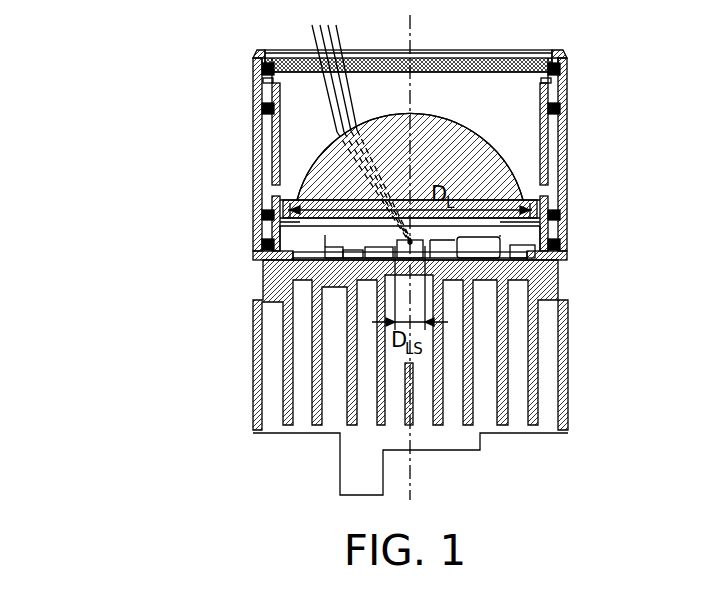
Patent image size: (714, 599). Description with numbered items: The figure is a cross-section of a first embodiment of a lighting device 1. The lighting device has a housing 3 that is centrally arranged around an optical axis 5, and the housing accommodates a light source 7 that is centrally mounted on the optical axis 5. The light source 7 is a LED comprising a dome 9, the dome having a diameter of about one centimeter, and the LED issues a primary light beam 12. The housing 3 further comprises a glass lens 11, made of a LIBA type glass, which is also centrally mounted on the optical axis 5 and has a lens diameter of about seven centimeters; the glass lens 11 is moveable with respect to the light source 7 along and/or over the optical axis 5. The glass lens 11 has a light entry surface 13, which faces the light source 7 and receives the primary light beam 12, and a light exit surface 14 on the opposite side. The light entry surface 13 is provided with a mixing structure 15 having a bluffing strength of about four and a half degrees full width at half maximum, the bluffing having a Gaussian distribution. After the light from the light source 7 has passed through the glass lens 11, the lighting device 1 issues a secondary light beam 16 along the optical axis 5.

The lighting device 1 is at (157, 111).
The housing 3 is at (568, 130).
The optical axis 5 is at (412, 30).
The light source 7 is at (410, 242).
The dome 9 is at (410, 242).
The glass lens 11 is at (487, 173).
The primary light beam 12 is at (423, 232).
The light entry surface 13 is at (318, 230).
The light exit surface 14 is at (320, 161).
The mixing structure 15 is at (505, 228).
The secondary light beam 16 is at (330, 93).